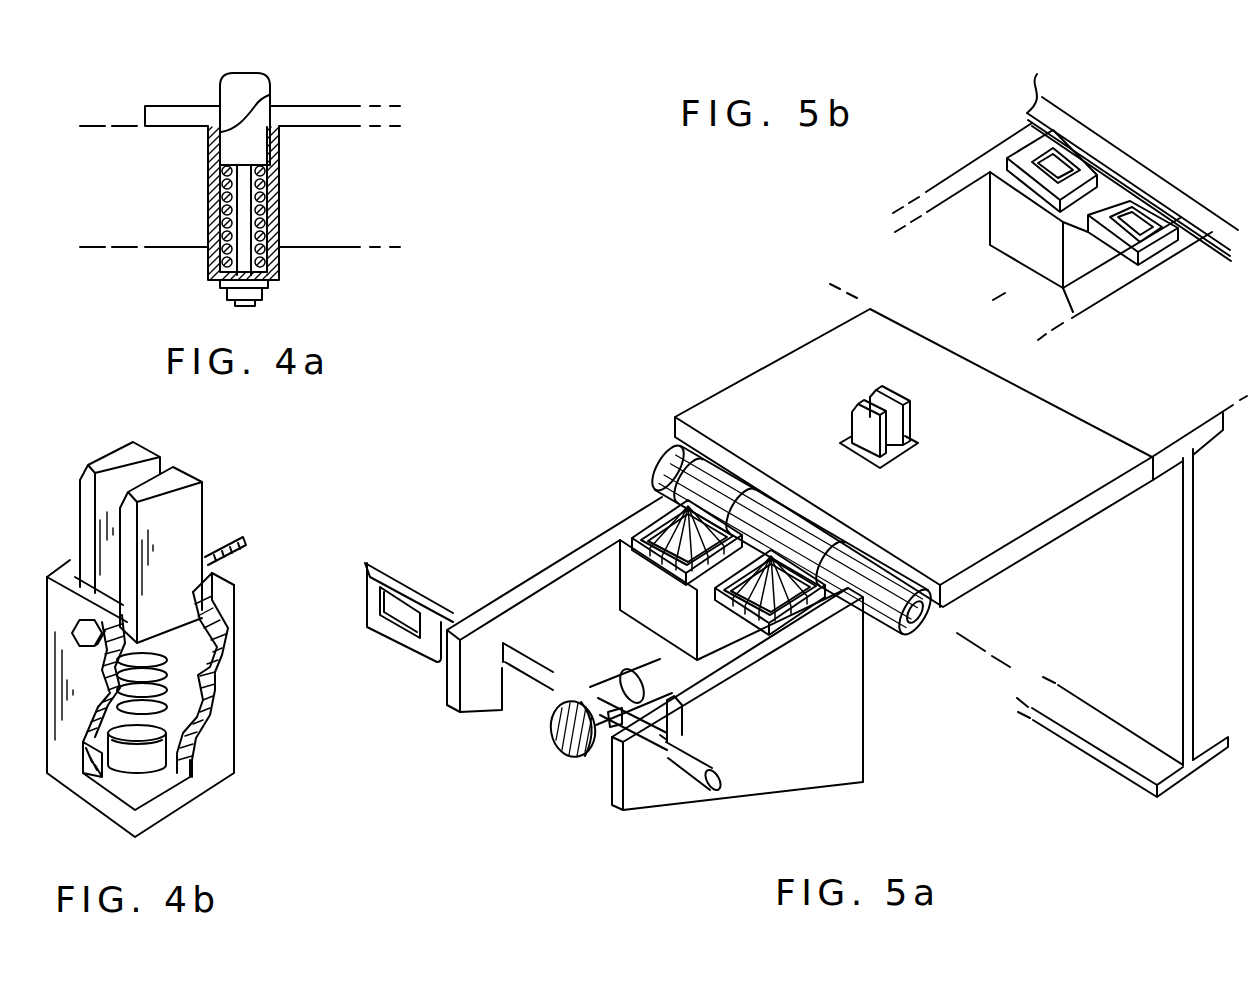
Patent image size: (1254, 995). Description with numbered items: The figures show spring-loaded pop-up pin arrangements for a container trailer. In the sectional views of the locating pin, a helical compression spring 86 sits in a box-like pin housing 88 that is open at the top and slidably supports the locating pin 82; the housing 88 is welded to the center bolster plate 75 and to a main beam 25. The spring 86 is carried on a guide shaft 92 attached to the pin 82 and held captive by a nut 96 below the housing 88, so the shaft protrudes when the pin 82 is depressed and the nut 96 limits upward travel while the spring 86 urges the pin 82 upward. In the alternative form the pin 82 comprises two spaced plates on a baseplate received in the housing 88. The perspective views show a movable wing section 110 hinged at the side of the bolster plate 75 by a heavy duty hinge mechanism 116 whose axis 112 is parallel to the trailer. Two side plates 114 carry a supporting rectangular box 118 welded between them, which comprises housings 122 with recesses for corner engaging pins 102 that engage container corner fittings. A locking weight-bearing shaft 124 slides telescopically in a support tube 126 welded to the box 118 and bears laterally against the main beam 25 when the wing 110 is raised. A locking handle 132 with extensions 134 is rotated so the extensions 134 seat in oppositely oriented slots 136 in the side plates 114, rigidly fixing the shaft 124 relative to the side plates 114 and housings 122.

In FIG. 4A, the main beam 25 is at (128, 247).
In FIG. 5A, the main beam 25 is at (1150, 598).
In FIG. 5A, the center bolster plate 75 is at (985, 385).
In FIG. 4A, the locating pin 82 is at (255, 76).
In FIG. 4B, the locating pin 82 is at (192, 495).
In FIG. 5A, the locating pin 82 is at (857, 422).
In FIG. 4A, the helical compression spring 86 is at (268, 204).
In FIG. 4B, the helical compression spring 86 is at (165, 713).
In FIG. 4A, the pin housing 88 is at (208, 192).
In FIG. 4B, the pin housing 88 is at (53, 662).
In FIG. 4A, the guide shaft 92 is at (250, 312).
In FIG. 4A, the nut 96 is at (225, 295).
In FIG. 5B, the corner engaging pin 102 is at (1032, 152).
In FIG. 5A, the corner engaging pin 102 is at (683, 512).
In FIG. 5A, the movable wing section 110 is at (543, 745).
In FIG. 5A, the pivot axis 112 is at (940, 637).
In FIG. 5B, the side plate 114 is at (927, 200).
In FIG. 5A, the side plate 114 is at (527, 617).
In FIG. 5B, the hinge mechanism 116 is at (1137, 173).
In FIG. 5A, the hinge mechanism 116 is at (867, 563).
In FIG. 5B, the supporting rectangular tube or box 118 is at (993, 213).
In FIG. 5A, the supporting rectangular tube or box 118 is at (620, 583).
In FIG. 5B, the pin housing 122 is at (1013, 170).
In FIG. 5A, the pin housing 122 is at (648, 532).
In FIG. 5A, the locking weight-bearing shaft 124 is at (553, 707).
In FIG. 5B, the support tube 126 is at (1073, 323).
In FIG. 5A, the support tube 126 is at (672, 737).
In FIG. 5A, the locking handle 132 is at (385, 628).
In FIG. 5A, the handle extension 134 is at (458, 707).
In FIG. 5A, the slot 136 is at (503, 645).